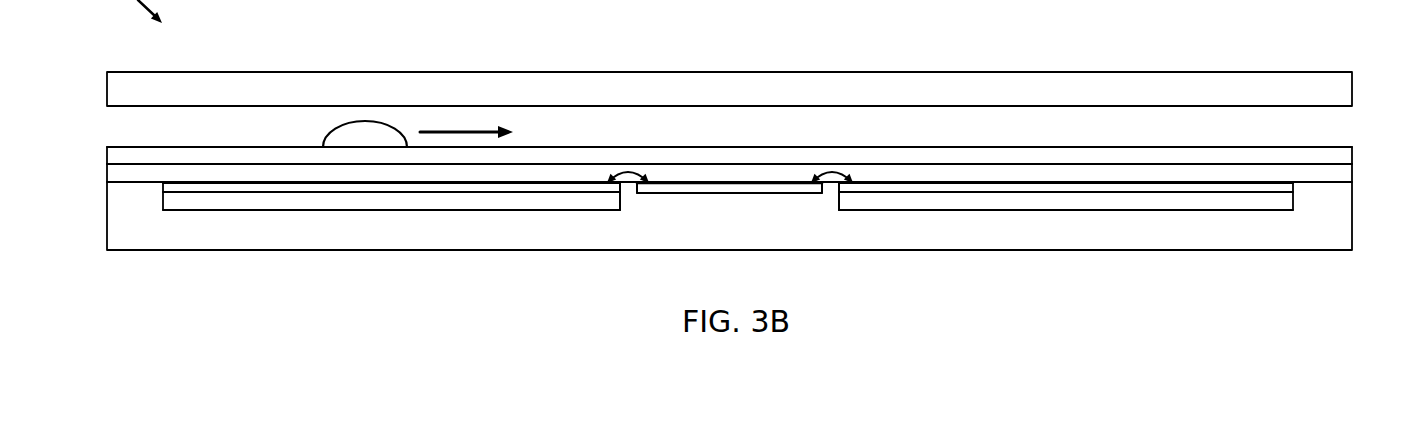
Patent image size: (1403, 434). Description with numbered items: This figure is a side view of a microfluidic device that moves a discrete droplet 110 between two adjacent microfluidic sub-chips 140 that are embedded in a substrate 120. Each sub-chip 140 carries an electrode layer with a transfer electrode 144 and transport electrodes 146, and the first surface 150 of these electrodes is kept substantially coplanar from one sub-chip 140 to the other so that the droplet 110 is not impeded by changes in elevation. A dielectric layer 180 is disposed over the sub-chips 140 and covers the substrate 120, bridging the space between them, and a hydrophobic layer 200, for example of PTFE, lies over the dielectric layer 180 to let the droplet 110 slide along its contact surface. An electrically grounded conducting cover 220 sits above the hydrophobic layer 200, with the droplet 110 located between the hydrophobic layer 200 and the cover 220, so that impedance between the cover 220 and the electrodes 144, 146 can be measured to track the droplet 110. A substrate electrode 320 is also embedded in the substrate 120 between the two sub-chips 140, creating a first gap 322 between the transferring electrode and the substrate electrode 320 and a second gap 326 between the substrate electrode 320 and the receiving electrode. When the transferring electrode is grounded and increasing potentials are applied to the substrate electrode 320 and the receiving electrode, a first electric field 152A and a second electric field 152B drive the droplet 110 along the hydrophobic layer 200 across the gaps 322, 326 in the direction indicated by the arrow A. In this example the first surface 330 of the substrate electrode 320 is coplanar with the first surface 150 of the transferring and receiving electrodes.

The droplet 110 is at (362, 122).
The substrate 120 is at (375, 238).
The microfluidic sub-chip 140 is at (285, 202).
The transfer electrode 144 is at (182, 190).
The transport electrode 146 is at (727, 258).
The first surface of the electrodes 150 is at (510, 183).
The first electric field 152A is at (631, 172).
The second electric field 152B is at (832, 172).
The dielectric layer 180 is at (117, 177).
The hydrophobic layer 200 is at (167, 153).
The cover 220 is at (158, 72).
The substrate electrode 320 is at (740, 185).
The first gap 322 is at (630, 203).
The second gap 326 is at (828, 203).
The first surface of the substrate electrode 330 is at (722, 182).
The sliding direction A is at (448, 130).